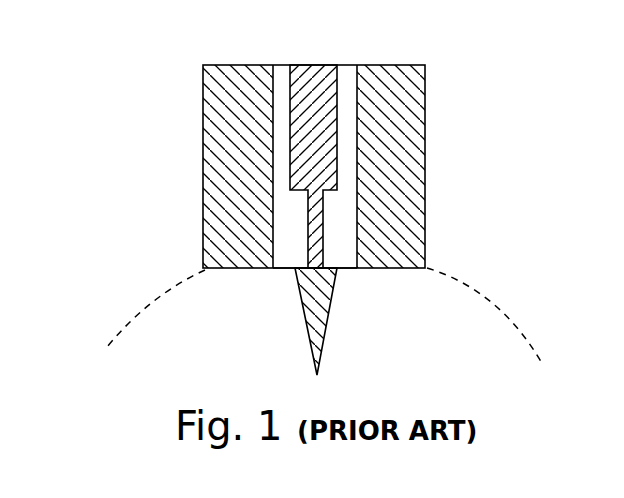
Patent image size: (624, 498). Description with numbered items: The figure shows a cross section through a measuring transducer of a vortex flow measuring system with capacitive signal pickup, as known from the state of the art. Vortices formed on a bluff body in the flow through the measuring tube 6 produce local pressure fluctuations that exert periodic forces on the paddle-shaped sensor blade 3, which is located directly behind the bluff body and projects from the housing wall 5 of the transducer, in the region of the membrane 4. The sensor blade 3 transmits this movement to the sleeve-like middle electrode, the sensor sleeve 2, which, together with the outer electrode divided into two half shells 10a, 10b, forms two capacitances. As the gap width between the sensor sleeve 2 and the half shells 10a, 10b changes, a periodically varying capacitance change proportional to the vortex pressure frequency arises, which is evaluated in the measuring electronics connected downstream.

The sensor sleeve 2 is at (320, 117).
The sensor blade 3 is at (327, 325).
The membrane 4 is at (282, 270).
The housing wall 5 is at (408, 207).
The measuring tube 6 is at (137, 312).
The half shell 10a is at (273, 72).
The half shell 10b is at (357, 72).